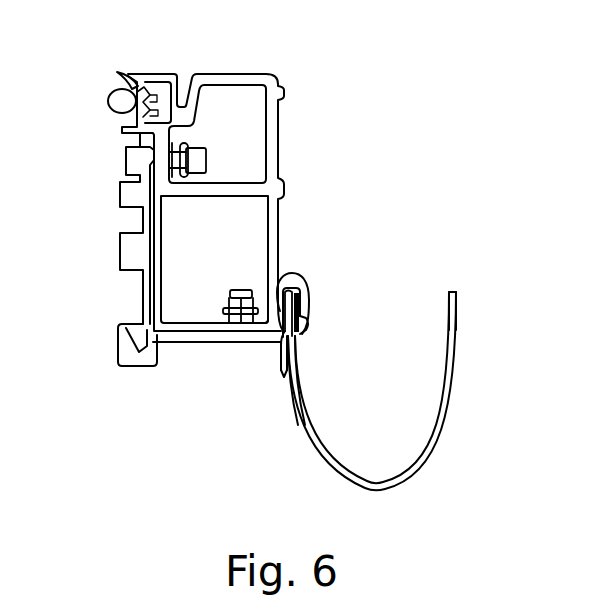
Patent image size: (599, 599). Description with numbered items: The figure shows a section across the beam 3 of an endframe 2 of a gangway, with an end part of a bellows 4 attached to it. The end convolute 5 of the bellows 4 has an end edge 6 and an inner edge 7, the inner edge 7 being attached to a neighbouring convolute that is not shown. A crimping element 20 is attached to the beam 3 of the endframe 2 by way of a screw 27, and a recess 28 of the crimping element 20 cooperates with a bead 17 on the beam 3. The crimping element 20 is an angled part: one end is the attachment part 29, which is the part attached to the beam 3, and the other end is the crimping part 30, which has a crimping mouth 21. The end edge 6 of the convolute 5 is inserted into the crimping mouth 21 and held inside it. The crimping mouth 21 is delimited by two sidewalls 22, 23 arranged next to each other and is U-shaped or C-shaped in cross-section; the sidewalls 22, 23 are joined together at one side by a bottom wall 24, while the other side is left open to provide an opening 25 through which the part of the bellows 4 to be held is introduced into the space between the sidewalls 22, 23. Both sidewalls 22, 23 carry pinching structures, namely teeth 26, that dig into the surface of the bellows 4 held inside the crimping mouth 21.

The endframe 2 is at (93, 60).
The beam 3 is at (248, 80).
The bellows 4 is at (453, 218).
The end convolute 5 is at (381, 493).
The end edge 6 is at (295, 341).
The inner edge 7 is at (457, 300).
The bead 17 is at (277, 308).
The crimping element 20 is at (242, 338).
The crimping mouth 21 is at (304, 296).
The sidewall 22 is at (280, 340).
The sidewall 23 is at (304, 314).
The bottom wall 24 is at (302, 290).
The opening 25 is at (286, 350).
The teeth 26 is at (226, 316).
The screw 27 is at (273, 320).
The recess 28 is at (295, 277).
The attachment part 29 is at (214, 337).
The crimping part 30 is at (325, 303).